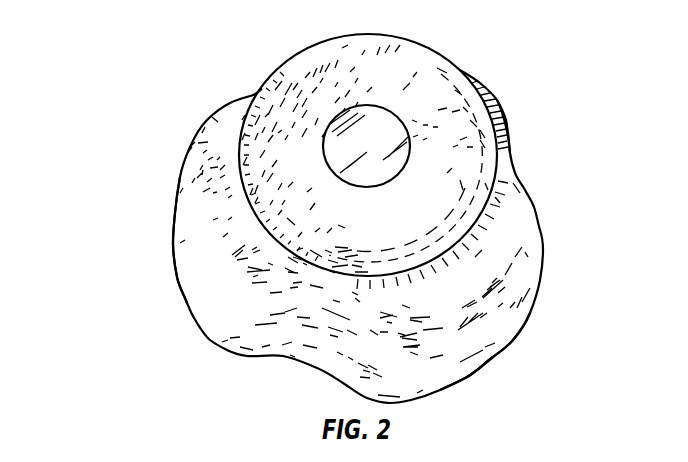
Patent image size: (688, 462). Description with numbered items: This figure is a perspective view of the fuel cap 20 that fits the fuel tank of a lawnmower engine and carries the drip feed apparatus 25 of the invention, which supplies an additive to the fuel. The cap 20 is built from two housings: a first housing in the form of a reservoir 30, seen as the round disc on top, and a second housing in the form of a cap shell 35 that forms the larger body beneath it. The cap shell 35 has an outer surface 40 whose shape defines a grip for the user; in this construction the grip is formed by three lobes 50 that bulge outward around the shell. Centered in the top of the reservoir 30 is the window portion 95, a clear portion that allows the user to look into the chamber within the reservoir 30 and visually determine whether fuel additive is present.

The cap 20 is at (128, 64).
The drip feed apparatus 25 is at (417, 66).
The reservoir 30 is at (284, 73).
The cap shell 35 is at (528, 233).
The outer surface 40 is at (489, 339).
The lobes 50 is at (506, 110).
The window portion 95 is at (380, 120).